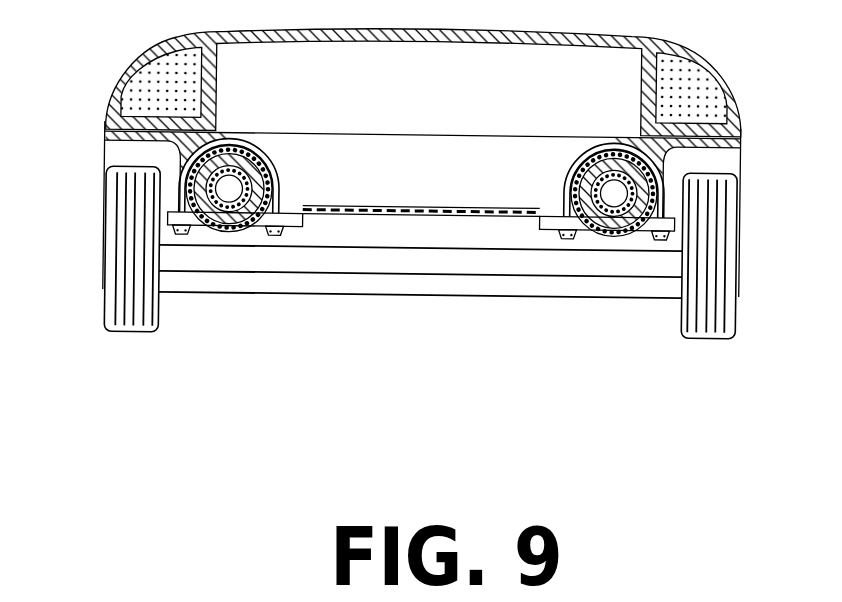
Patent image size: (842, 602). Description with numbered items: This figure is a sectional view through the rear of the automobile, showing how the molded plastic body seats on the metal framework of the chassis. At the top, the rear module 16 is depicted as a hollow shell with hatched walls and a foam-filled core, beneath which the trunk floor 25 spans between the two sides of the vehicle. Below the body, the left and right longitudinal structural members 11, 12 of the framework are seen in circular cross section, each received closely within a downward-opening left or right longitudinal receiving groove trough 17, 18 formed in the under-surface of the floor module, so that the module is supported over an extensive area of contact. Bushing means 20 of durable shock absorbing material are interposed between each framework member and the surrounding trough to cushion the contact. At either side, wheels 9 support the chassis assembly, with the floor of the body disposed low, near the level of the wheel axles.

The wheels 9 is at (105, 292).
The left longitudinal structural member 11 is at (607, 232).
The right longitudinal structural member 12 is at (228, 228).
The rear module 16 is at (128, 78).
The left longitudinal receiving groove trough 17 is at (600, 240).
The right longitudinal receiving groove trough 18 is at (250, 233).
The bushing means 20 is at (207, 218).
The trunk floor 25 is at (363, 207).